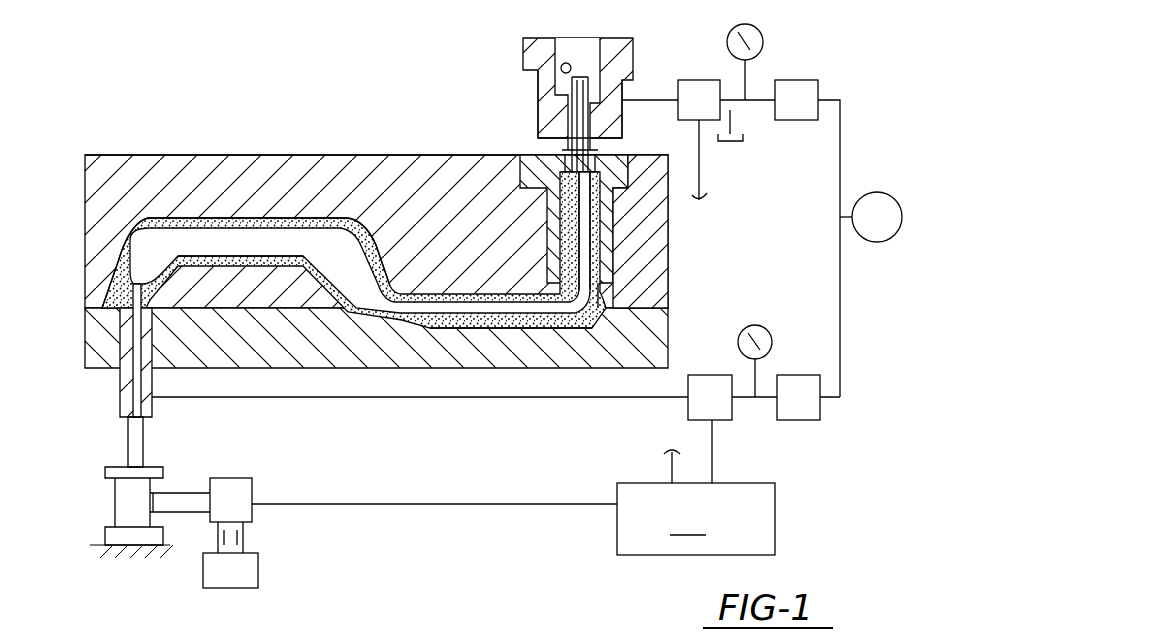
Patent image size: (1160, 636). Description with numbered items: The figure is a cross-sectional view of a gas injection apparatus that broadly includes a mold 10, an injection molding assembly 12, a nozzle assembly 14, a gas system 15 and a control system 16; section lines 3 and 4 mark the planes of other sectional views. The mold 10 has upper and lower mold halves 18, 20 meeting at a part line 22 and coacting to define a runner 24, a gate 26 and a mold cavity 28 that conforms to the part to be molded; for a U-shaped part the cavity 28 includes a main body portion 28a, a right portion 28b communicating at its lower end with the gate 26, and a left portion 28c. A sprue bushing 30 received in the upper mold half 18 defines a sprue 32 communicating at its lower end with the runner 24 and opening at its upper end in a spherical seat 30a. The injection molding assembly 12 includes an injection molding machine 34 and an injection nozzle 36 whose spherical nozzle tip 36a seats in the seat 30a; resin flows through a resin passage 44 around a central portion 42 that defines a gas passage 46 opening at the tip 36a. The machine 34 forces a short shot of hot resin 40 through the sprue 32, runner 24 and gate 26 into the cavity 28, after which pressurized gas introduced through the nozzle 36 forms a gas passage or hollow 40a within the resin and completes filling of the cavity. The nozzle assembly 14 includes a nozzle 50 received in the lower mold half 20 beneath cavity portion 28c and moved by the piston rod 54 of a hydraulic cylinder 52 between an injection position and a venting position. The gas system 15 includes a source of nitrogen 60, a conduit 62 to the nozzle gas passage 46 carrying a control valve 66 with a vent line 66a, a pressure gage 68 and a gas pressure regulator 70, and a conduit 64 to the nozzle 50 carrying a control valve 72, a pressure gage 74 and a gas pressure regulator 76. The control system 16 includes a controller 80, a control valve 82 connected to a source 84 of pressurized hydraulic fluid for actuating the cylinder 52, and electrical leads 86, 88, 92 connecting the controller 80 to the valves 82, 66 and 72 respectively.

The section line 3- 3 is at (448, 280).
The section line 4- 4 is at (237, 210).
The mold 10 is at (415, 245).
The injection molding assembly 12 is at (556, 88).
The nozzle assembly 14 is at (187, 514).
The gas system 15 is at (527, 253).
The control system 16 is at (566, 492).
The upper mold half 18 is at (455, 150).
The lower mold half 20 is at (606, 318).
The part line 22 is at (640, 298).
The runner 24 is at (505, 296).
The gate 26 is at (398, 345).
The mold cavity 28 is at (140, 219).
The main body portion 28a is at (205, 224).
The right portion 28b is at (372, 242).
The left portion 28c is at (128, 238).
The sprue bushing 30 is at (622, 235).
The spherical seat 30a is at (545, 165).
The sprue 32 is at (596, 288).
The injection molding machine 34 is at (626, 56).
The injection nozzle 36 is at (625, 88).
The spherical nozzle tip 36a is at (583, 148).
The hot resin 40 is at (582, 312).
The gas passage or hollow 40a is at (298, 230).
The central portion 42 is at (585, 75).
The resin passage 44 is at (537, 77).
The gas passage 46 is at (558, 152).
The nozzle 50 is at (120, 400).
The hydraulic cylinder 52 is at (110, 503).
The piston rod 54 is at (143, 440).
The source of nitrogen 60 is at (874, 243).
The conduit 62 is at (623, 104).
The conduit 64 is at (320, 398).
The control valve 66 is at (722, 92).
The vent line 66a is at (735, 117).
The pressure gage 68 is at (762, 42).
The gas pressure regulator 70 is at (797, 80).
The control valve 72 is at (720, 375).
The pressure gage 74 is at (773, 336).
The gas pressure regulator 76 is at (798, 420).
The controller 80 is at (696, 519).
The control valve 82 is at (253, 510).
The source of pressurized hydraulic fluid 84 is at (255, 583).
The electrical lead 86 is at (345, 505).
The electrical lead 88 is at (705, 180).
The electrical lead 92 is at (714, 453).